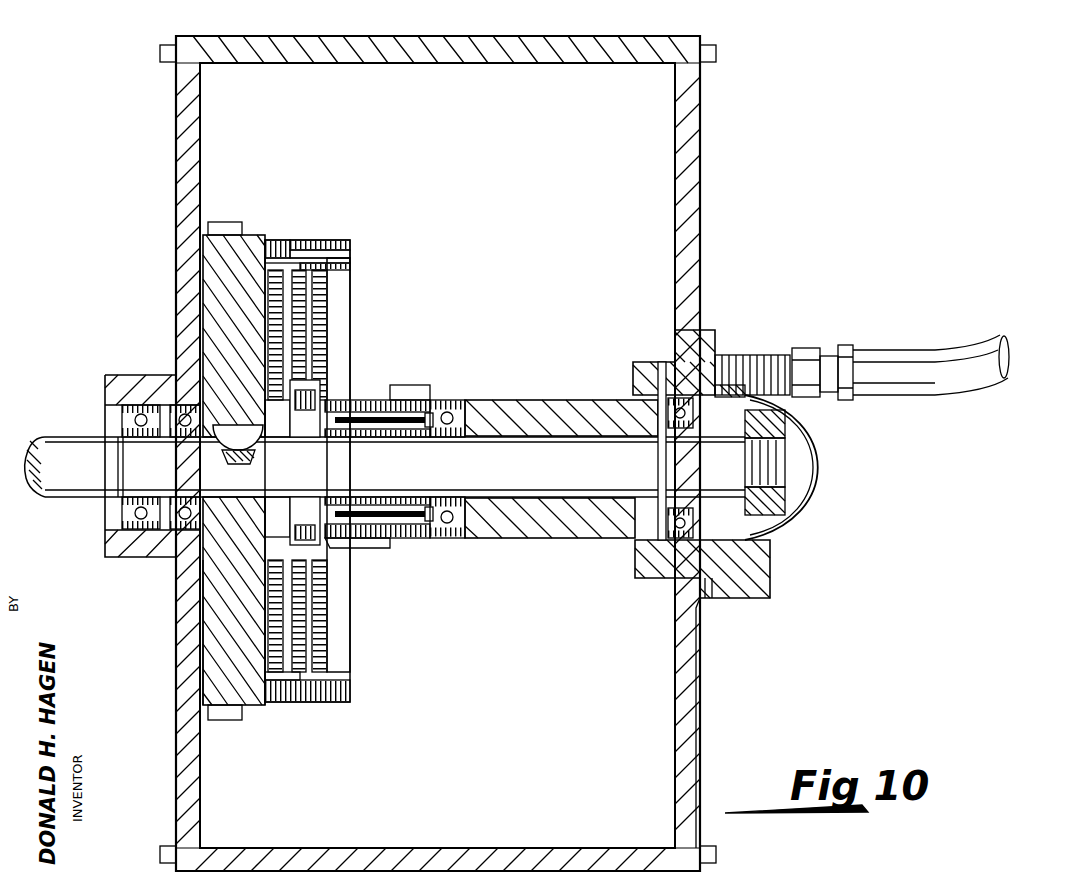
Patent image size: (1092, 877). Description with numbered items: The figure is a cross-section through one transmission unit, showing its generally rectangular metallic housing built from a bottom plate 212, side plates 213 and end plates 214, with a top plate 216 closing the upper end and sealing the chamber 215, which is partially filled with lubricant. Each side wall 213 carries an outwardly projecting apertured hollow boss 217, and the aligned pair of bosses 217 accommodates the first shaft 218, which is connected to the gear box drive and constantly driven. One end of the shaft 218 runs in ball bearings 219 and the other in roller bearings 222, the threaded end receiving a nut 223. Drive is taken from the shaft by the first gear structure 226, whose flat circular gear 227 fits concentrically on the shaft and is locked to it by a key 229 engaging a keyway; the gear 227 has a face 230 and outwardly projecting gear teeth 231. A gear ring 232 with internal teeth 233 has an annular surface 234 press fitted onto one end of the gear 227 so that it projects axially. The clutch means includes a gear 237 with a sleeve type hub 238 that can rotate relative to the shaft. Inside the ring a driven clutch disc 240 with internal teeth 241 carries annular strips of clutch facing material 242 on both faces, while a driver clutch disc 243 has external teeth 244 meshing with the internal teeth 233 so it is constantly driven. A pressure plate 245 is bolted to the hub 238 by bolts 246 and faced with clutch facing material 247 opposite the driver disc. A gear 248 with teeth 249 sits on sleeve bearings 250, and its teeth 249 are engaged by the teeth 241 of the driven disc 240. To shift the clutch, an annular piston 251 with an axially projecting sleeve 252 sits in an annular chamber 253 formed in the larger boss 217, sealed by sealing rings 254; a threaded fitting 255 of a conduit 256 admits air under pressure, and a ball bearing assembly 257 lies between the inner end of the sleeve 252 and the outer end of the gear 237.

The bottom plate 212 is at (418, 847).
The side plate 213 is at (176, 132).
The end plate 214 is at (595, 231).
The chamber 215 is at (660, 236).
The top plate 216 is at (542, 62).
The boss 217 is at (137, 355).
The first shaft 218 is at (540, 475).
The ball bearings 219 is at (125, 510).
The roller bearings 222 is at (768, 545).
The nut 223 is at (812, 493).
The first gear structure 226 is at (275, 172).
The gear 227 is at (203, 258).
The key 229 is at (226, 427).
The face 230 is at (318, 234).
The gear teeth 231 is at (222, 222).
The gear ring 232 is at (342, 240).
The internal teeth 233 is at (350, 690).
The annular surface 234 is at (283, 240).
The gear 237 is at (418, 385).
The sleeve type hub 238 is at (370, 545).
The driven clutch disc 240 is at (280, 702).
The internal teeth 241 is at (290, 550).
The clutch facing material 242 is at (262, 598).
The driver clutch disc 243 is at (350, 265).
The external teeth 244 is at (350, 250).
The pressure plate 245 is at (350, 622).
The bolts 246 is at (405, 545).
The clutch facing material 247 is at (325, 305).
The gear 248 is at (345, 418).
The teeth 249 is at (340, 400).
The sleeve bearings 250 is at (310, 437).
The annular piston 251 is at (650, 580).
The sleeve 252 is at (537, 400).
The annular chamber 253 is at (713, 590).
The sealing rings 254 is at (698, 600).
The threaded fitting 255 is at (808, 348).
The conduit 256 is at (1005, 372).
The ball bearing assembly 257 is at (455, 540).